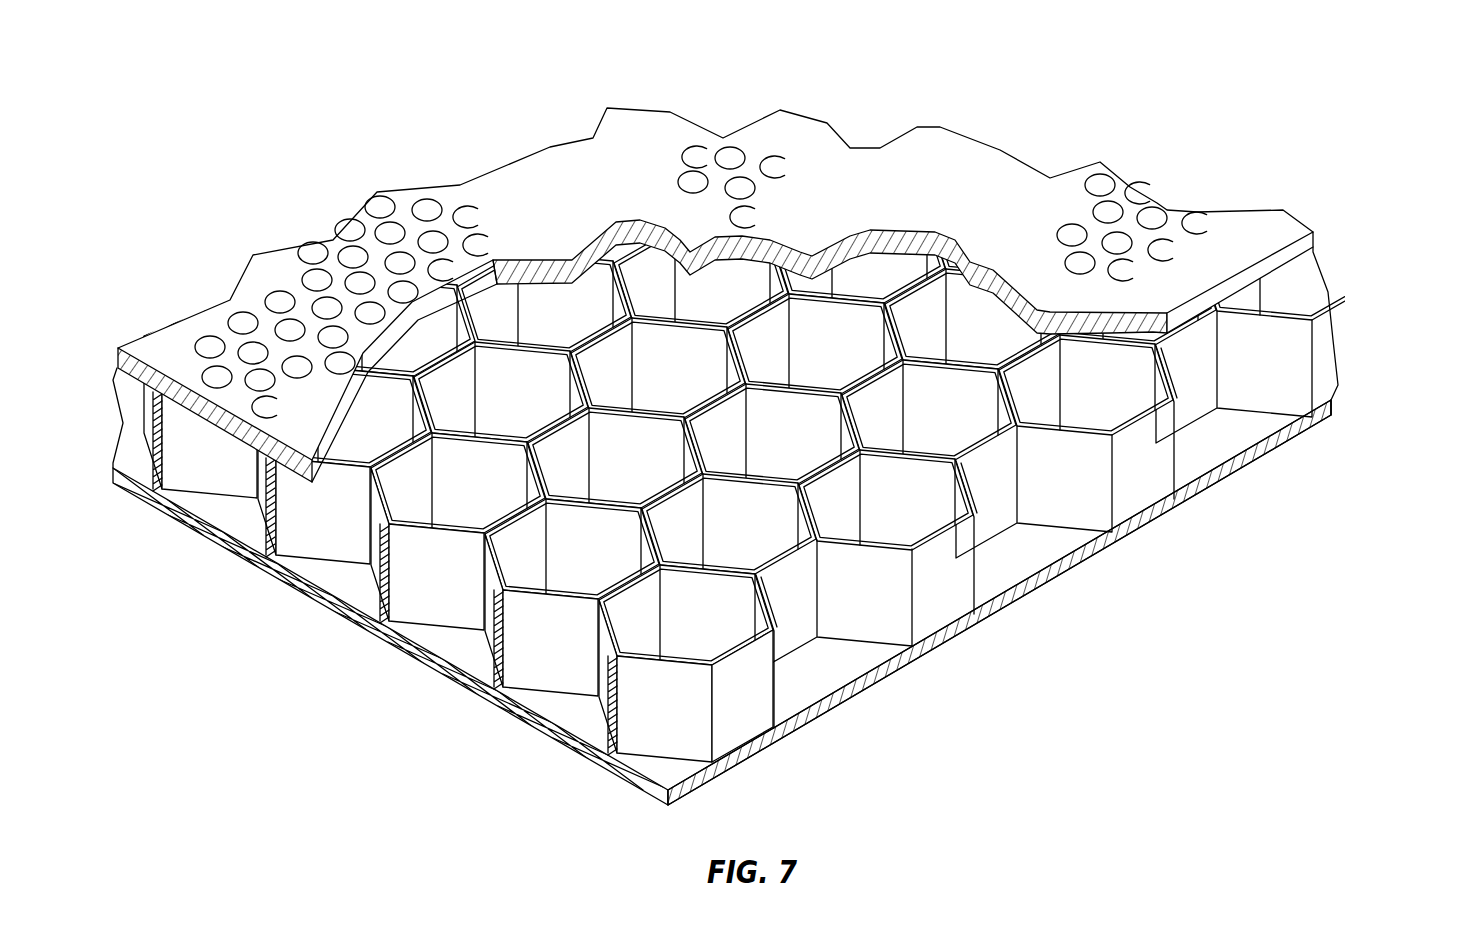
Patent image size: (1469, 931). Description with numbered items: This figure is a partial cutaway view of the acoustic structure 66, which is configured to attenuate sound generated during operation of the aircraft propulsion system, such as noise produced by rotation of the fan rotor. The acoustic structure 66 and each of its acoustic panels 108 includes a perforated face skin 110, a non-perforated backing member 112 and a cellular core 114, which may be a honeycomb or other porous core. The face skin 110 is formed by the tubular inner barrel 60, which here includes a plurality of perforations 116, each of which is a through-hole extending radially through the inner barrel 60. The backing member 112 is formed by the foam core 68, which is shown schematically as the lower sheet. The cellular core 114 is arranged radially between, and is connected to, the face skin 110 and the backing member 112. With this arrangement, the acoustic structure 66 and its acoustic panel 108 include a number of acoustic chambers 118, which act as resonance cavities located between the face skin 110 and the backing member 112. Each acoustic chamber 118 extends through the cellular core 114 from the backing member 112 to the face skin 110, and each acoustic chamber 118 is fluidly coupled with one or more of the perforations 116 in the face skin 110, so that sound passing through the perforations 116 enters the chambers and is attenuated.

The inner barrel 60 is at (693, 295).
The perforated face skin 110 is at (192, 301).
The acoustic structure 66 is at (903, 188).
The acoustic panel 108 is at (1147, 118).
The foam core 68 is at (722, 602).
The backing member 112 is at (1063, 602).
The cellular core 114 is at (780, 458).
The perforations 116 is at (427, 210).
The acoustic chambers 118 is at (843, 512).